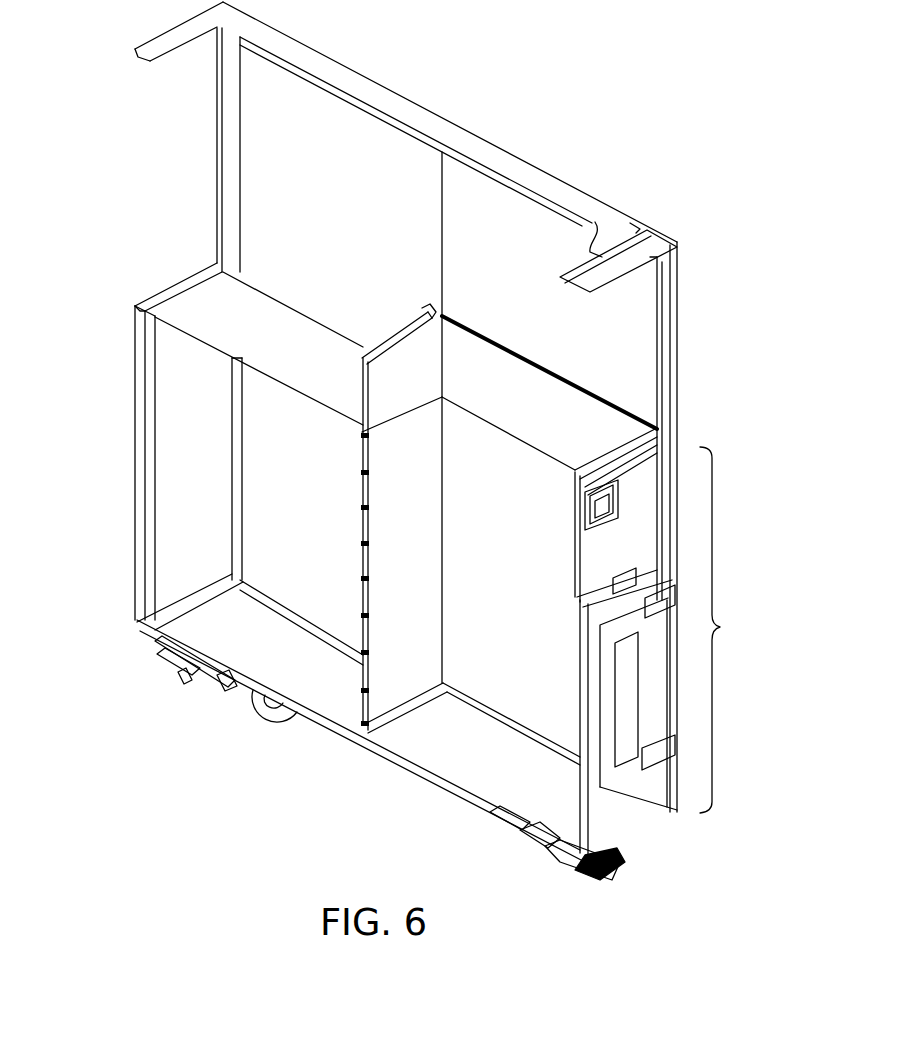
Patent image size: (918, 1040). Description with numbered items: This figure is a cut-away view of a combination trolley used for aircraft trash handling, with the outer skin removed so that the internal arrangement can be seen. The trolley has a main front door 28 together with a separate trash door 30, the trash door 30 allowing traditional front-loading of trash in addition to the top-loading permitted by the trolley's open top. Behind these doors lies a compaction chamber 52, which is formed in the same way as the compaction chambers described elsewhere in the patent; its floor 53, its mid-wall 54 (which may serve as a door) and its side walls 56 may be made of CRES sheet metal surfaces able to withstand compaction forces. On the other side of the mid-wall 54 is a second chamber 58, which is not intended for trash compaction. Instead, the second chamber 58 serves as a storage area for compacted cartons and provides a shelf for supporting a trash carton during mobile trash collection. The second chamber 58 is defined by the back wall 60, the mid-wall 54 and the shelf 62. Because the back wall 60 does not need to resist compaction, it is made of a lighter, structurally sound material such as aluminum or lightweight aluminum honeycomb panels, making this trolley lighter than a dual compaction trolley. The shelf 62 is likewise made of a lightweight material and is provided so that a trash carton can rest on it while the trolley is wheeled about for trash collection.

The main front door 28 is at (722, 630).
The trash door 30 is at (637, 507).
The compaction chamber 52 is at (522, 505).
The floor 53 is at (473, 755).
The mid-wall 54 is at (420, 558).
The side walls 56 is at (478, 478).
The second chamber 58 is at (268, 432).
The back wall 60 is at (188, 507).
The shelf 62 is at (208, 322).